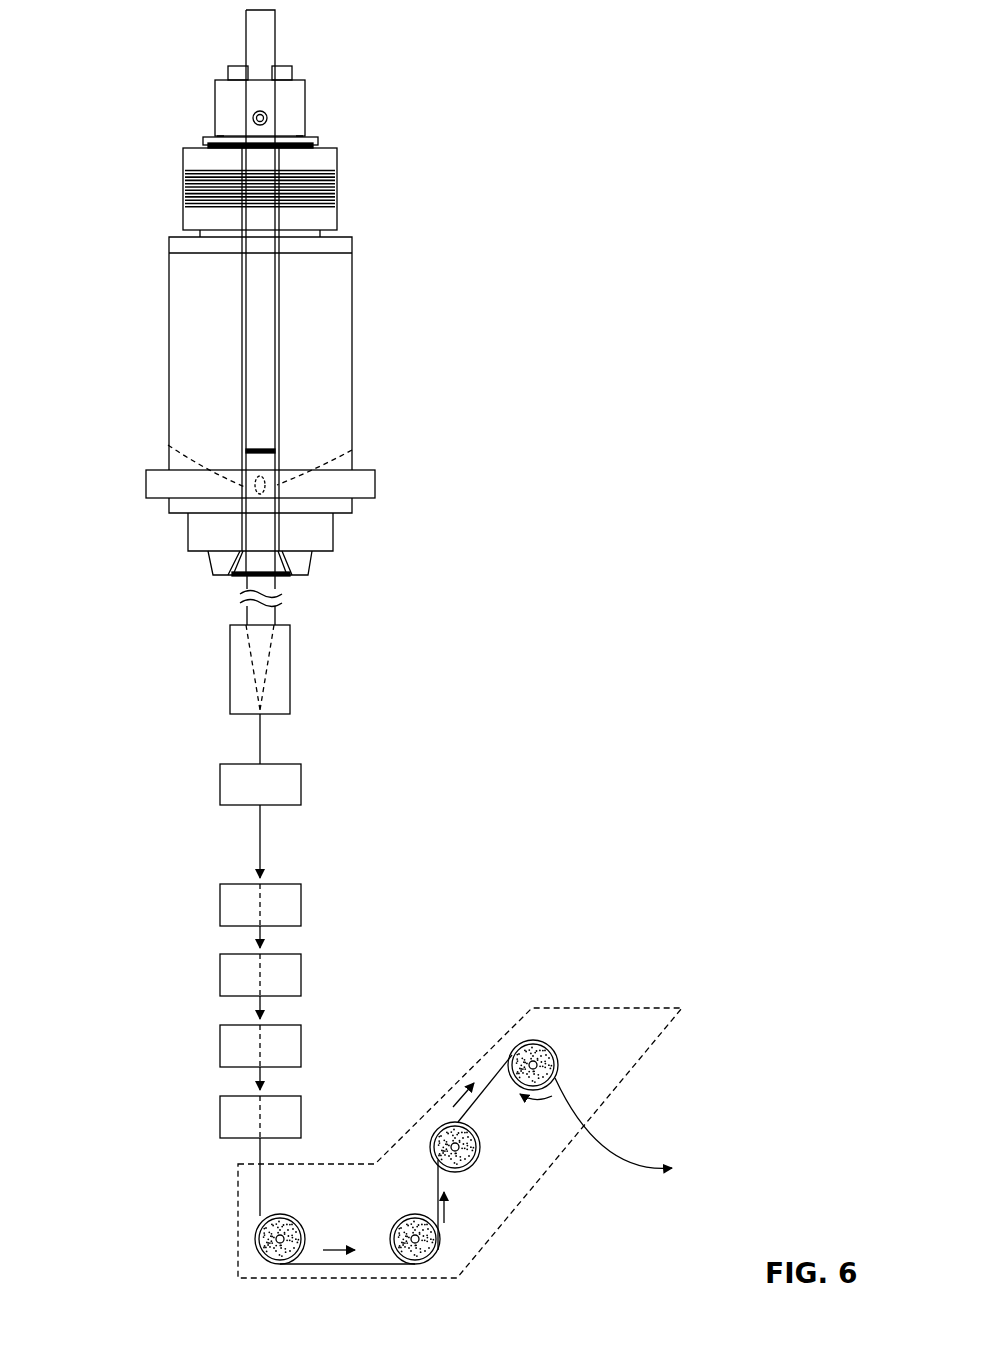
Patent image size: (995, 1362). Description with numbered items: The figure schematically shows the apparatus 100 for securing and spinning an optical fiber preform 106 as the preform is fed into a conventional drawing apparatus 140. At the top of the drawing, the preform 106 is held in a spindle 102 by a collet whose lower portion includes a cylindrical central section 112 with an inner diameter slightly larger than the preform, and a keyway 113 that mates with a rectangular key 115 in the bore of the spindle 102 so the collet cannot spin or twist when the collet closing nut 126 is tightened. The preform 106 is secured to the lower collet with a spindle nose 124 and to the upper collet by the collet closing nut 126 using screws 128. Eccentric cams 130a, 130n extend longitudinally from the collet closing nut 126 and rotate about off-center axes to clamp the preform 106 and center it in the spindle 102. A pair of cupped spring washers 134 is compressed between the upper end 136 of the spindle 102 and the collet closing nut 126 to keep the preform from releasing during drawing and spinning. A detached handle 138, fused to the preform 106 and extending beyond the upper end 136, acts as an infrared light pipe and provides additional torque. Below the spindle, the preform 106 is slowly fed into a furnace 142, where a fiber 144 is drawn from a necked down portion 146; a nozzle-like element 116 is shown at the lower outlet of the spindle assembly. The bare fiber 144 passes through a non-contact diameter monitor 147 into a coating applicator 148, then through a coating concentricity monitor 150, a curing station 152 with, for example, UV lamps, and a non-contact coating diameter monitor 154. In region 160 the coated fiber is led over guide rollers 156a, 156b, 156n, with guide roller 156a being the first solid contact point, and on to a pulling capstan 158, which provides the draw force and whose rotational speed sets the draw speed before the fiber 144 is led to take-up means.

The apparatus 100 is at (385, 360).
The spindle 102 is at (169, 353).
The optical fiber preform 106 is at (310, 562).
The cylindrical central section 112 is at (255, 505).
The keyway 113 is at (352, 450).
The rectangular key 115 is at (168, 445).
The nozzle 116 is at (230, 565).
The spindle nose 124 is at (188, 535).
The collet closing nut 126 is at (305, 93).
The screws 128 is at (253, 118).
The eccentric cam 130a is at (242, 65).
The eccentric cam 130n is at (282, 65).
The cupped spring washers 134 is at (318, 140).
The upper end of the spindle 136 is at (337, 148).
The handle 138 is at (246, 42).
The drawing apparatus 140 is at (188, 905).
The furnace 142 is at (290, 652).
The fiber 144 is at (262, 740).
The necked down portion 146 is at (268, 687).
The non-contact diameter monitor 147 is at (301, 786).
The coating applicator 148 is at (301, 908).
The coating concentricity monitor 150 is at (301, 978).
The curing station 152 is at (301, 1048).
The non-contact coating diameter monitor 154 is at (301, 1118).
The guide roller 156a is at (255, 1240).
The guide roller 156b is at (440, 1240).
The guide roller 156n is at (480, 1148).
The pulling capstan 158 is at (532, 1040).
The region 160 is at (480, 1058).